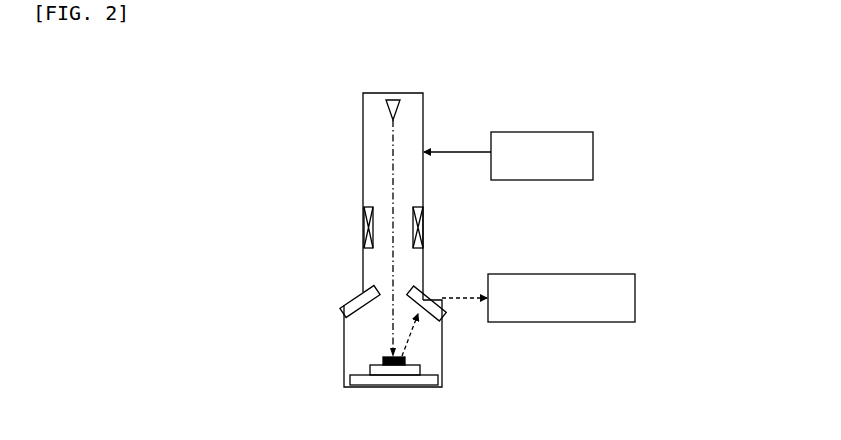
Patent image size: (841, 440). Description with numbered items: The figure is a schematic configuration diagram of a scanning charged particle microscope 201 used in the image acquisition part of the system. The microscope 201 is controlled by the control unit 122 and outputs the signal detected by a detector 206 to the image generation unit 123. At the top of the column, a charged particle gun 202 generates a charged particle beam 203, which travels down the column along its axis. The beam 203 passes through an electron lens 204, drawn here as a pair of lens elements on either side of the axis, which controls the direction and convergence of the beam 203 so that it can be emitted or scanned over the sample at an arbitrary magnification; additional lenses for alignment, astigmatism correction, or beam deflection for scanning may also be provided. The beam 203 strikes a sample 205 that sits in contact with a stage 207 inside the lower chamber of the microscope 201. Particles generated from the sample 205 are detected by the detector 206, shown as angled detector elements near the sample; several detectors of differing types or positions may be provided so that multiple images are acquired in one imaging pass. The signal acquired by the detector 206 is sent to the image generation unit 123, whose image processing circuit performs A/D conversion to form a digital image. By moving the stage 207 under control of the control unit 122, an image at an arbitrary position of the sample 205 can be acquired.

The control unit 122 is at (570, 132).
The image generation unit 123 is at (595, 270).
The scanning charged particle microscope 201 is at (443, 370).
The charged particle gun 202 is at (396, 93).
The charged particle beam 203 is at (390, 150).
The electron lens 204 is at (364, 235).
The sample 205 is at (405, 360).
The detector 206 is at (346, 310).
The stage 207 is at (352, 375).